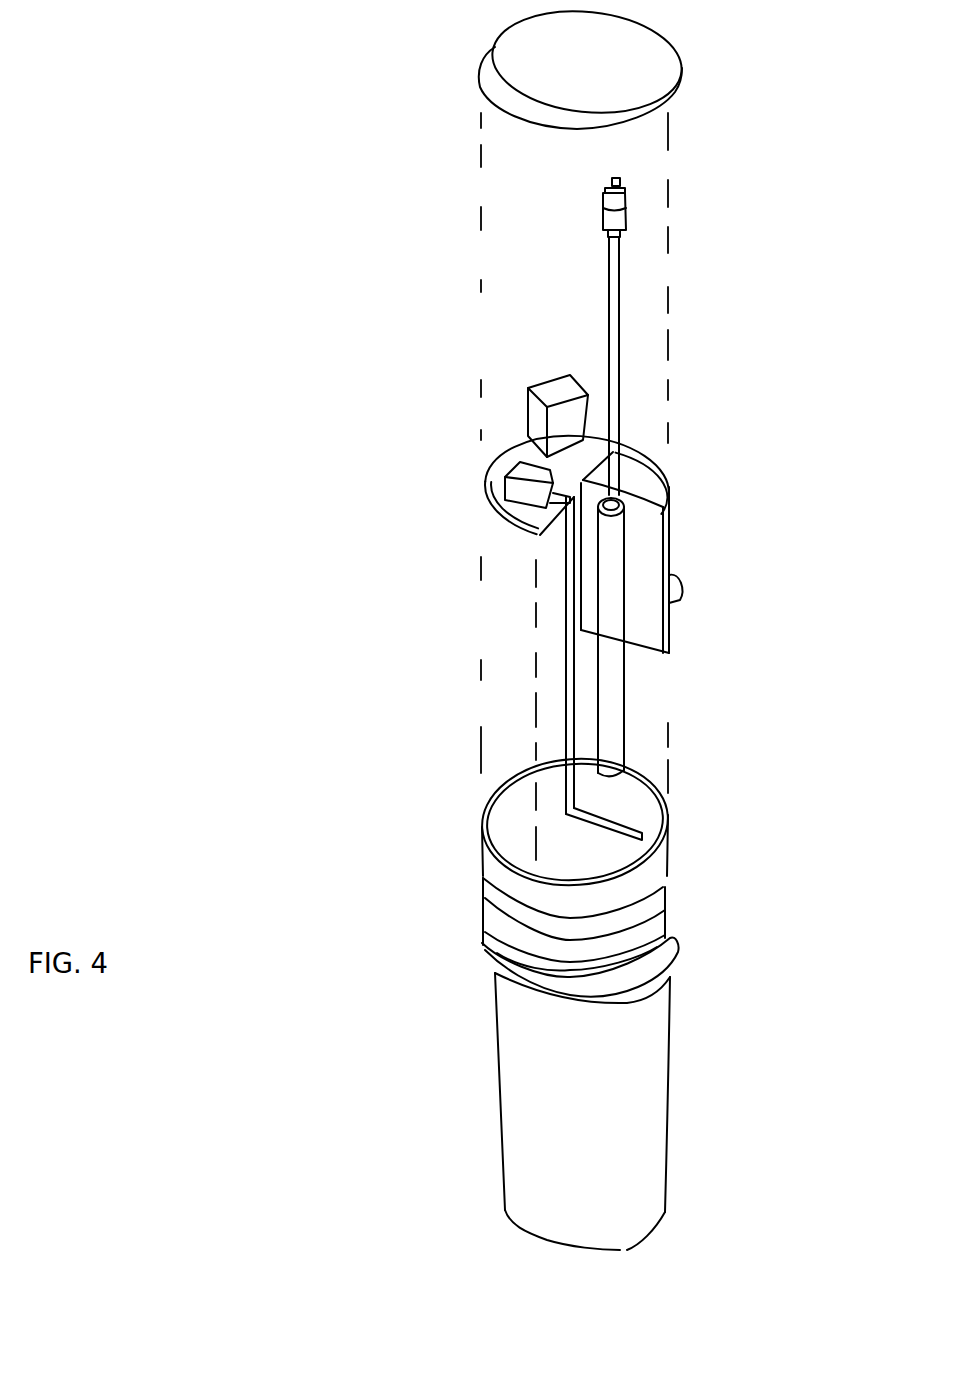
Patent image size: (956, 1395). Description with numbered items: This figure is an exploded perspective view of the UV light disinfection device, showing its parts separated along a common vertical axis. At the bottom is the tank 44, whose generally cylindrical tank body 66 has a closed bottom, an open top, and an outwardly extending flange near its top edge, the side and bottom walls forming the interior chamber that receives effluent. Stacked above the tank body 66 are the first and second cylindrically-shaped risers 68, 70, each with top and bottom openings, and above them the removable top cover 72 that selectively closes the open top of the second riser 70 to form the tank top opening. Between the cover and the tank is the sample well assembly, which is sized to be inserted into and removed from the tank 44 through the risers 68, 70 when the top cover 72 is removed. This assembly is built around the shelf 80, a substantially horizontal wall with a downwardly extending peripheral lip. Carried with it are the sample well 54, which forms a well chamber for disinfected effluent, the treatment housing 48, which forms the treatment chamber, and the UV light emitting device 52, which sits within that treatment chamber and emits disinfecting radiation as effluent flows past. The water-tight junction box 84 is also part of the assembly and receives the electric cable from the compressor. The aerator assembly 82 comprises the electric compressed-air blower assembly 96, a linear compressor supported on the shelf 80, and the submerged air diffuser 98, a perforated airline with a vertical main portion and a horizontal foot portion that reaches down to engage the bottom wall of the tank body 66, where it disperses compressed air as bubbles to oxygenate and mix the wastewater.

The tank 44 is at (497, 1075).
The treatment housing 48 is at (625, 703).
The UV light emitting device 52 is at (605, 255).
The sample well 54 is at (643, 557).
The tank body 66 is at (498, 1167).
The first riser 68 is at (477, 913).
The second riser 70 is at (483, 837).
The top cover 72 is at (552, 63).
The shelf 80 is at (503, 460).
The aerator assembly 82 is at (513, 497).
The junction box 84 is at (550, 382).
The blower assembly 96 is at (517, 462).
The air diffuser 98 is at (560, 683).